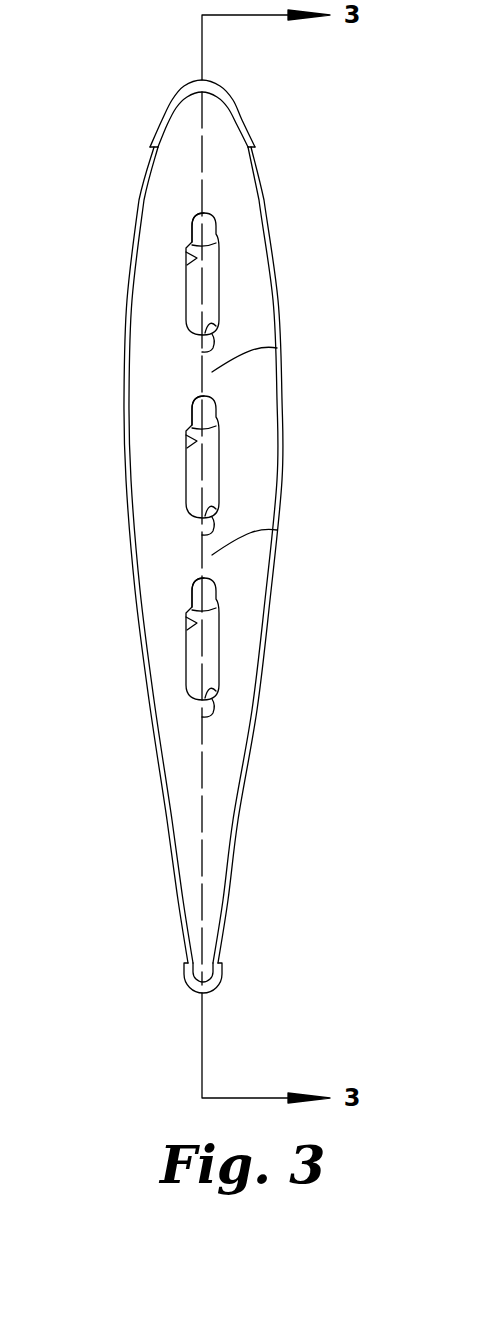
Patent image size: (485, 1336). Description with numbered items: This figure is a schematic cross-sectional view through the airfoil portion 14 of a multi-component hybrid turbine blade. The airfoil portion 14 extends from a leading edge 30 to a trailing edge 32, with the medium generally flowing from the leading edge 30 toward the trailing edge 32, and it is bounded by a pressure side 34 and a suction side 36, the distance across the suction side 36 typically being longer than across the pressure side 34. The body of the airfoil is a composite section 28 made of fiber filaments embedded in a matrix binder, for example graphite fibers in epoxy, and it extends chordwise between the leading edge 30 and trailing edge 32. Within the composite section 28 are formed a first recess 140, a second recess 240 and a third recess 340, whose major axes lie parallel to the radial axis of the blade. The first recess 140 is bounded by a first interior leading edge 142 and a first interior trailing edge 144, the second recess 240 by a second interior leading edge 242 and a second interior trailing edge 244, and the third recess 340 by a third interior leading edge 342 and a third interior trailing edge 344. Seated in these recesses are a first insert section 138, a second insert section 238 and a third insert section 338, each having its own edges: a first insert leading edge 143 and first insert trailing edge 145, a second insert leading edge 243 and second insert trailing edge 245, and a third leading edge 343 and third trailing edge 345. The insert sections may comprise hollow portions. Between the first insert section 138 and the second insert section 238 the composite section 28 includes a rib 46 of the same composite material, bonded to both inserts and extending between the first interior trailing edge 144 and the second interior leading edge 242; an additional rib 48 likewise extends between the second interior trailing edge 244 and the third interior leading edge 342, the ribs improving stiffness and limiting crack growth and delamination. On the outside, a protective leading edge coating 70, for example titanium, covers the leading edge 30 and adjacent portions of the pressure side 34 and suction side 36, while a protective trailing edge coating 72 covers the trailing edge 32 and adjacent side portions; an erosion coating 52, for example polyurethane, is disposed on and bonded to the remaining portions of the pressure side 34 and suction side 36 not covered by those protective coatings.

The airfoil portion 14 is at (219, 528).
The composite section 28 is at (216, 528).
The leading edge 30 is at (176, 98).
The trailing edge 32 is at (195, 976).
The pressure side 34 is at (262, 680).
The suction side 36 is at (126, 470).
The rib 46 is at (280, 358).
The additional rib 48 is at (280, 540).
The erosion coating 52 is at (146, 190).
The protective leading edge coating 70 is at (168, 106).
The protective trailing edge coating 72 is at (188, 975).
The first insert section 138 is at (196, 287).
The first recess 140 is at (195, 262).
The first interior leading edge 142 is at (203, 245).
The first insert leading edge 143 is at (205, 215).
The first interior trailing edge 144 is at (207, 349).
The first insert trailing edge 145 is at (190, 323).
The second insert section 238 is at (133, 457).
The second recess 240 is at (128, 423).
The second interior leading edge 242 is at (266, 412).
The second insert leading edge 243 is at (282, 390).
The second interior trailing edge 244 is at (132, 539).
The second insert trailing edge 245 is at (123, 511).
The third insert section 338 is at (133, 639).
The third recess 340 is at (128, 605).
The third interior leading edge 342 is at (266, 594).
The third leading edge 343 is at (282, 573).
The third interior trailing edge 344 is at (132, 721).
The third trailing edge 345 is at (123, 693).